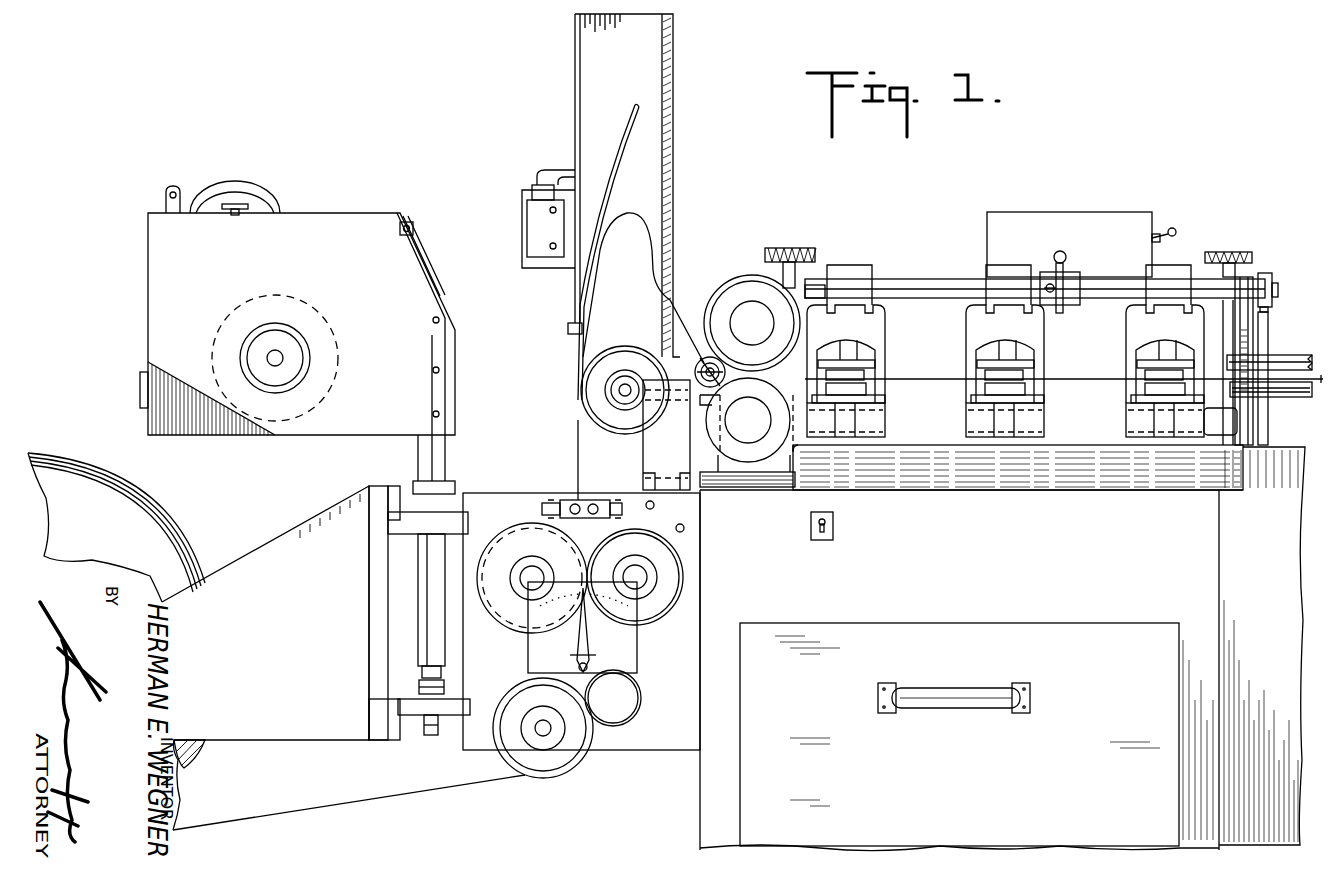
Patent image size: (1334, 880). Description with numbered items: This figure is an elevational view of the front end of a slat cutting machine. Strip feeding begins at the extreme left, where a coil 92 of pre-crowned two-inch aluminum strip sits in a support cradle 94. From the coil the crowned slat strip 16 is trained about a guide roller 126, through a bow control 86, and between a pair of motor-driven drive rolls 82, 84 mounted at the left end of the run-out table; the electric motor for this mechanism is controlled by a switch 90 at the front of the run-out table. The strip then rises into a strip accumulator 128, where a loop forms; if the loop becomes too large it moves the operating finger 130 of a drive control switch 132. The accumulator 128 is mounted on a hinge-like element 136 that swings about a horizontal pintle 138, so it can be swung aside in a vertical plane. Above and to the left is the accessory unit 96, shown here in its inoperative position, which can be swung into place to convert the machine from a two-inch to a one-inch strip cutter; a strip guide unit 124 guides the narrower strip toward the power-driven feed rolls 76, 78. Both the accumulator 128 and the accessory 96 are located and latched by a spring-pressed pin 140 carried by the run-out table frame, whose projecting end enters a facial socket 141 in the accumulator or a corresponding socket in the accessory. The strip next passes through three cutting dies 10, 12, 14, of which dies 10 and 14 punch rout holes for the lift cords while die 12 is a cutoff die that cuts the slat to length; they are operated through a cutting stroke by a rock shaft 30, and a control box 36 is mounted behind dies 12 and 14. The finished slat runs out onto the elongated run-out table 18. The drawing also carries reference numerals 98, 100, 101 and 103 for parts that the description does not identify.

The cutting die 10 is at (868, 426).
The cutoff die 12 is at (1025, 415).
The cutting die 14 is at (1185, 425).
The crowned slat strip 16 is at (312, 808).
The run-out table 18 is at (1289, 455).
The rock shaft 30 is at (942, 261).
The control box 36 is at (1098, 222).
The feed roll 76 is at (722, 290).
The lower feed roll 78 is at (773, 447).
The drive roll 82 is at (518, 540).
The drive roll 84 is at (672, 572).
The bow control 86 is at (641, 655).
The switch 90 is at (834, 526).
The coil 92 is at (118, 500).
The support cradle 94 is at (300, 526).
The strip accessory unit 96 is at (140, 260).
The cover plate 98 is at (418, 251).
The cylinder 100 is at (418, 612).
The cross bar 101 is at (463, 522).
The bracket 103 is at (418, 722).
The strip guide unit 124 is at (716, 366).
The guide roller 126 is at (553, 762).
The strip accumulator 128 is at (643, 162).
The operating finger 130 is at (632, 128).
The drive control switch 132 is at (538, 246).
The hinge-like element 136 is at (641, 436).
The horizontal pintle 138 is at (641, 482).
The pin 140 is at (708, 404).
The facial socket 141 is at (688, 396).